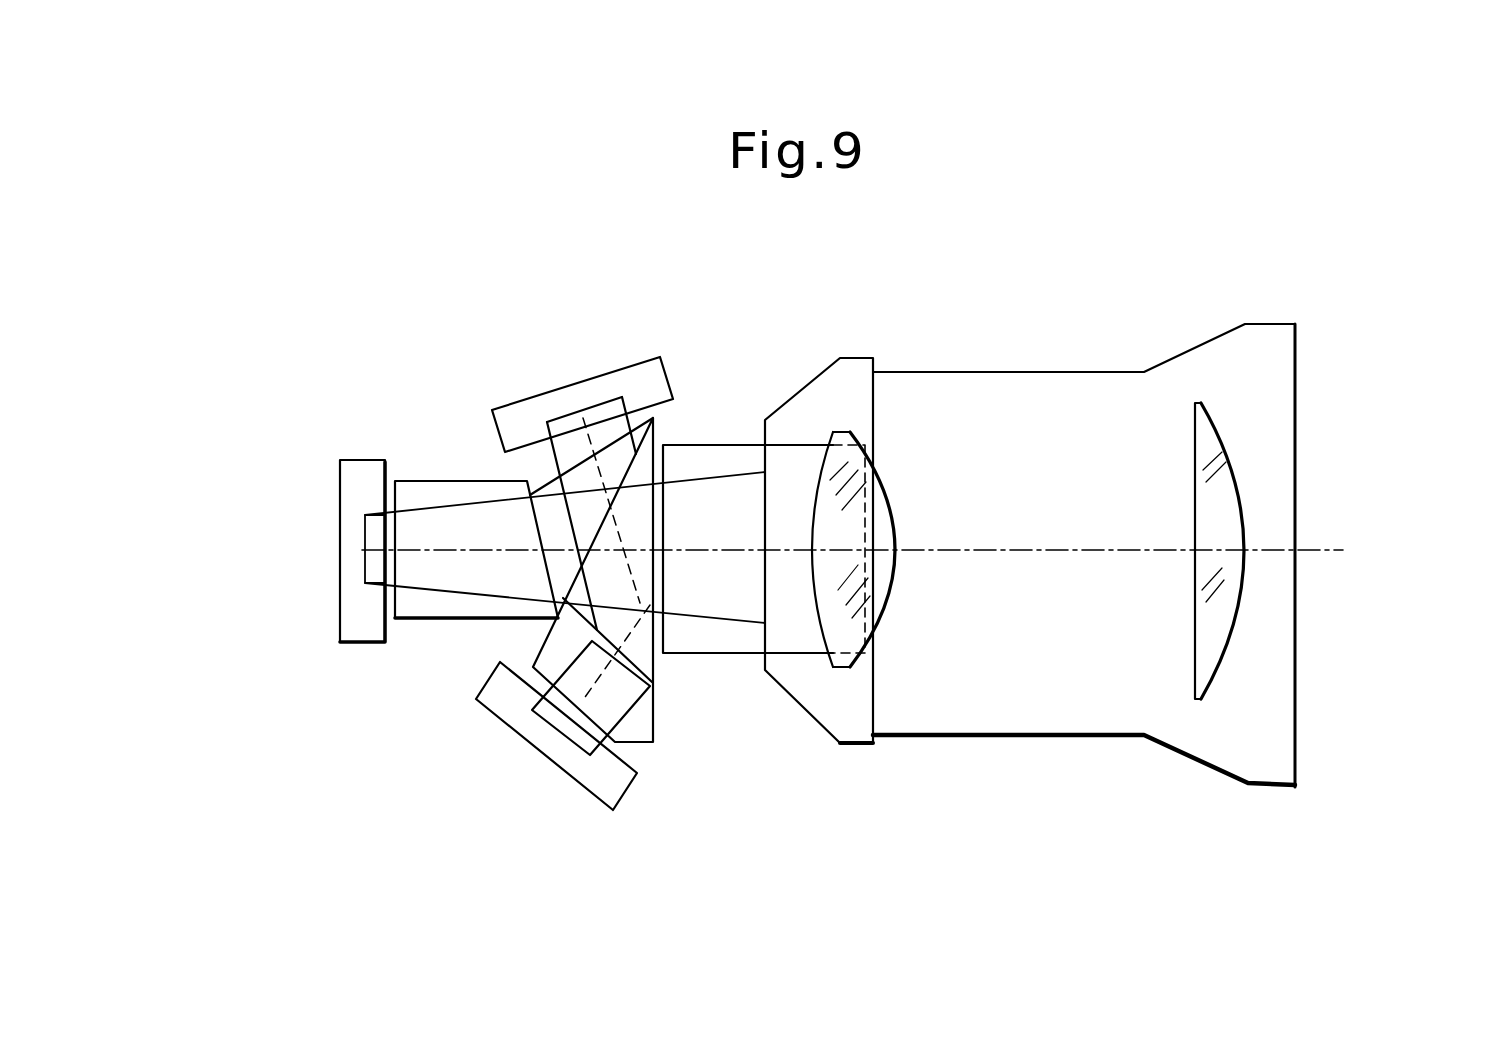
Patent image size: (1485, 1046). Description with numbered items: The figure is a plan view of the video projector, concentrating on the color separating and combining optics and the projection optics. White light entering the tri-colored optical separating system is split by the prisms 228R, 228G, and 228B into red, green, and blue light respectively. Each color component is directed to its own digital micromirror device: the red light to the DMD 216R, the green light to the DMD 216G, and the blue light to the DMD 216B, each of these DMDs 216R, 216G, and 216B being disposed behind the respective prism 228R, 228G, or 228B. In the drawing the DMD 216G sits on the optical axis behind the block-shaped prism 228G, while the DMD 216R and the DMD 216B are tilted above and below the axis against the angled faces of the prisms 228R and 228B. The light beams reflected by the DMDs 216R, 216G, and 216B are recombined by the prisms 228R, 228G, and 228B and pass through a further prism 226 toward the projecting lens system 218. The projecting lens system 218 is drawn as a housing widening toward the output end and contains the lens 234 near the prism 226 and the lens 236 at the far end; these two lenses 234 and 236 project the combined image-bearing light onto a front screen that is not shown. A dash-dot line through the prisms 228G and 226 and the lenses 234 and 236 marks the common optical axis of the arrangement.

The DMD 216R is at (483, 408).
The DMD 216G is at (338, 628).
The DMD 216B is at (500, 738).
The prism 228R is at (530, 478).
The prism 228G is at (452, 612).
The prism 228B is at (658, 725).
The prism 226 is at (793, 462).
The projecting lens system 218 is at (1115, 499).
The lens 234 is at (880, 588).
The lens 236 is at (1220, 437).